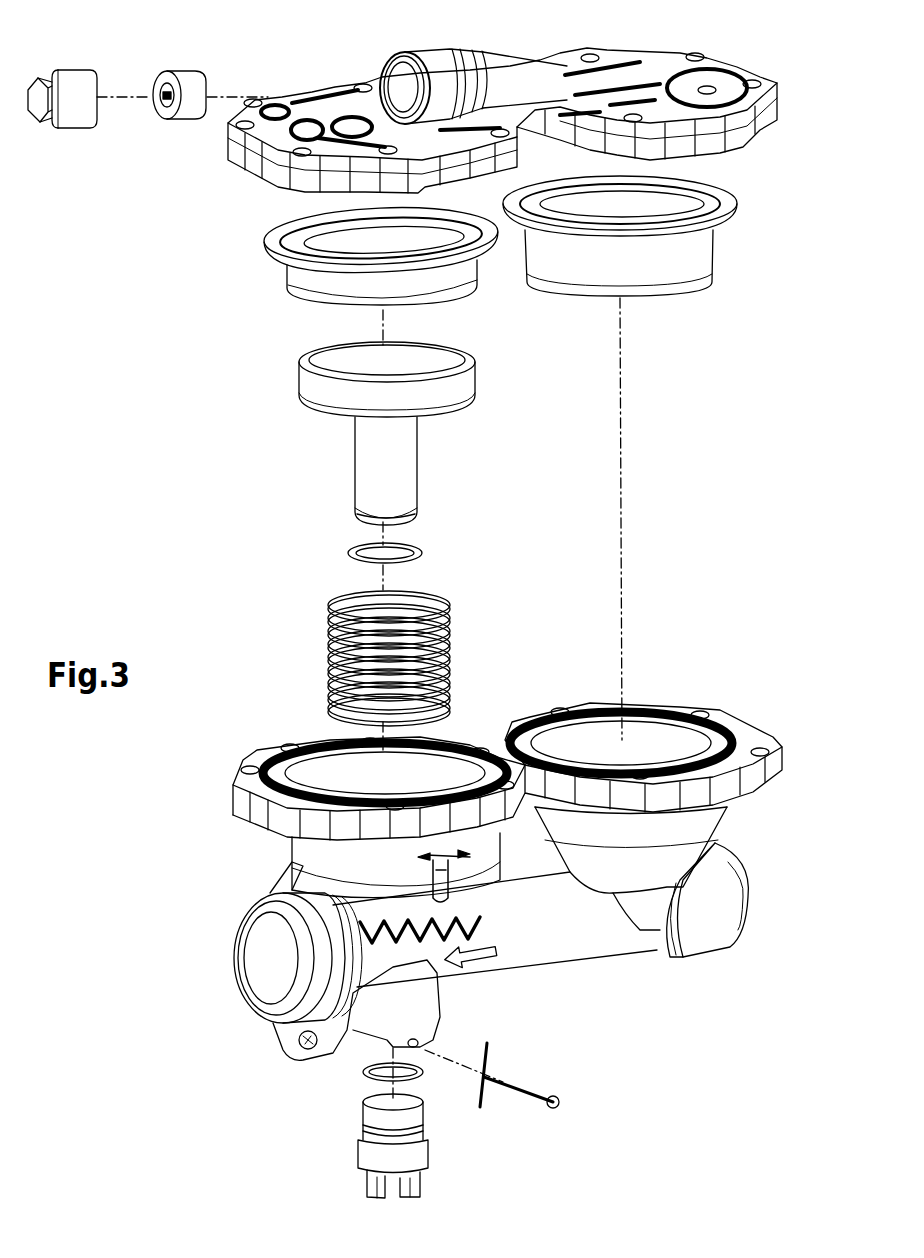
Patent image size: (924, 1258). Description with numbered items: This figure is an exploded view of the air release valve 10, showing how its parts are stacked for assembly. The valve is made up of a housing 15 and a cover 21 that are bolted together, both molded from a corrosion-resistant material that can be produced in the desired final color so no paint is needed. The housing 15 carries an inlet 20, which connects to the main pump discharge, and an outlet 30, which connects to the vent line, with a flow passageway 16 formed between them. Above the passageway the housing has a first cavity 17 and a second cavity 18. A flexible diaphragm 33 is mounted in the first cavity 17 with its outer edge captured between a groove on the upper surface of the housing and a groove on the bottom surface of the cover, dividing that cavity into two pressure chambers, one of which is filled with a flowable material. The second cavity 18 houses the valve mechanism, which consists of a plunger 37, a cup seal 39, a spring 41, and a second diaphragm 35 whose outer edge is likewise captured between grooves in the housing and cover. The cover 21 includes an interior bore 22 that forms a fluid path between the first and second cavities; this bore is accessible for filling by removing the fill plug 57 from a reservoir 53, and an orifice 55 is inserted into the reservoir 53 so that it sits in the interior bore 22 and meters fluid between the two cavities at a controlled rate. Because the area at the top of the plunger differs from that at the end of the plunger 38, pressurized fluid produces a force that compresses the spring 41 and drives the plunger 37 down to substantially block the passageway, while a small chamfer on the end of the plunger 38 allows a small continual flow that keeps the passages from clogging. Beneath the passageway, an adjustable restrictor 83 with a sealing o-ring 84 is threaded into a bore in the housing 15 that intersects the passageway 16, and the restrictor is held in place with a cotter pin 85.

The air release valve 10 is at (742, 423).
The housing 15 is at (571, 960).
The flow passageway 16 is at (500, 957).
The first cavity 17 is at (678, 850).
The second cavity 18 is at (316, 853).
The inlet 20 is at (749, 890).
The cover 21 is at (733, 63).
The interior bore 22 is at (503, 78).
The outlet 30 is at (270, 965).
The diaphragm 33 is at (692, 261).
The second diaphragm 35 is at (317, 280).
The plunger 37 is at (372, 458).
The end of the plunger 38 is at (406, 522).
The cup seal 39 is at (348, 553).
The spring 41 is at (330, 645).
The reservoir 53 is at (380, 78).
The orifice 55 is at (198, 76).
The fill plug 57 is at (72, 82).
The adjustable restrictor 83 is at (413, 1158).
The sealing o-ring 84 is at (373, 1077).
The cotter pin 85 is at (558, 1095).